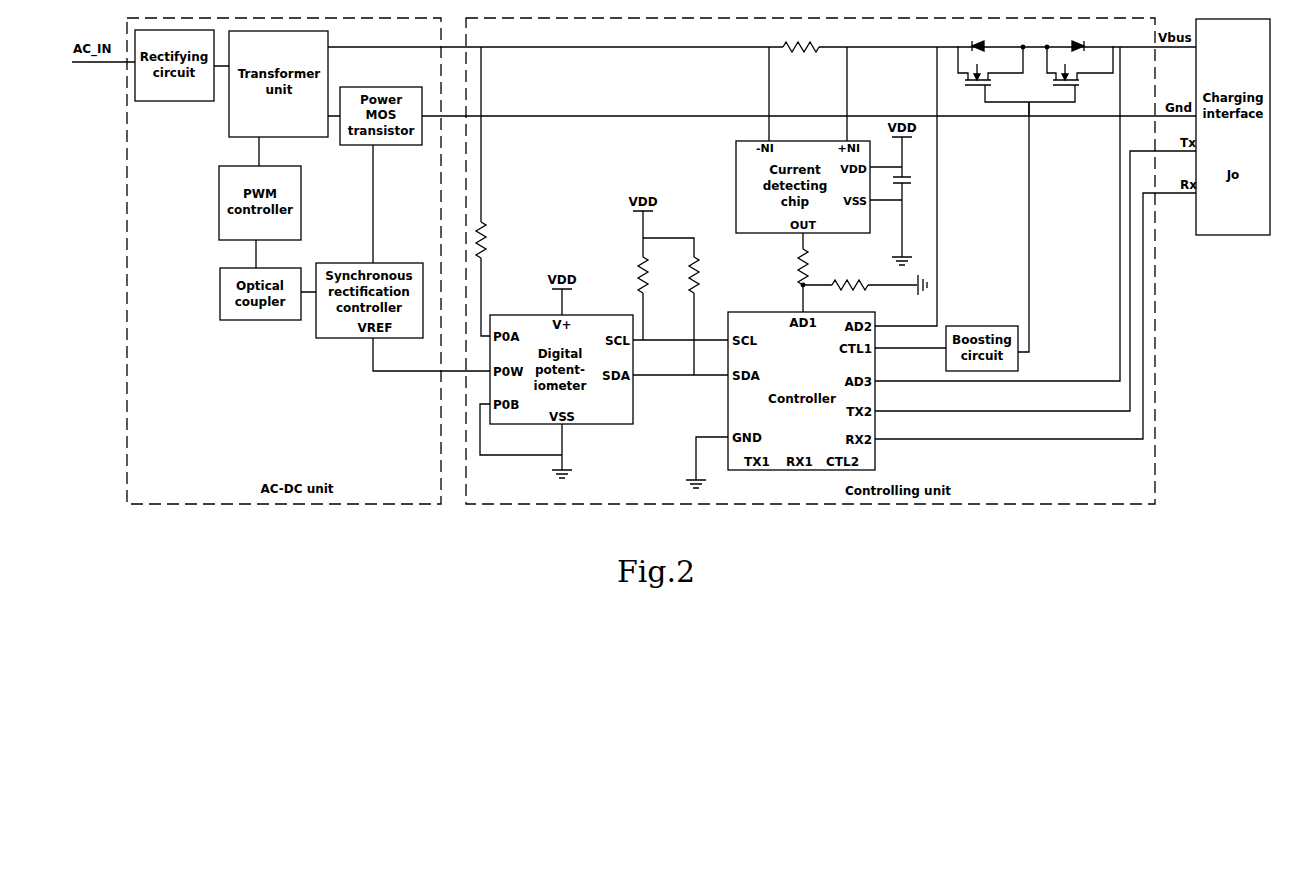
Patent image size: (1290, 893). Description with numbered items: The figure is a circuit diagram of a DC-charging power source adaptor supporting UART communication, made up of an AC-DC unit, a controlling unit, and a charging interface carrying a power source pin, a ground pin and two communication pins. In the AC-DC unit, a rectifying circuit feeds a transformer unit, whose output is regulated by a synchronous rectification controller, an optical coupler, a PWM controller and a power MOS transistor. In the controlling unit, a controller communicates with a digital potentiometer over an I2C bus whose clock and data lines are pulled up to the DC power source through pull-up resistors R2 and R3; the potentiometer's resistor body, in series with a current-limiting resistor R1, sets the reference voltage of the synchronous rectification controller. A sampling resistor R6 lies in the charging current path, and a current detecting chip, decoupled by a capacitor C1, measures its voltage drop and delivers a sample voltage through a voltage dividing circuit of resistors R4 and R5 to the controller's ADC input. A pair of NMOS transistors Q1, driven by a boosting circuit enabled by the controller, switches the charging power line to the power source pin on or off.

The current-limiting resistor R1 is at (494, 191).
The pull-up resistor R2 is at (631, 298).
The pull-up resistor R3 is at (705, 316).
The resistor R4 is at (793, 272).
The resistor R5 is at (865, 278).
The sampling resistor R6 is at (801, 39).
The capacitor C1 is at (913, 184).
The pair of NMOS transistors Q1 is at (1035, 71).